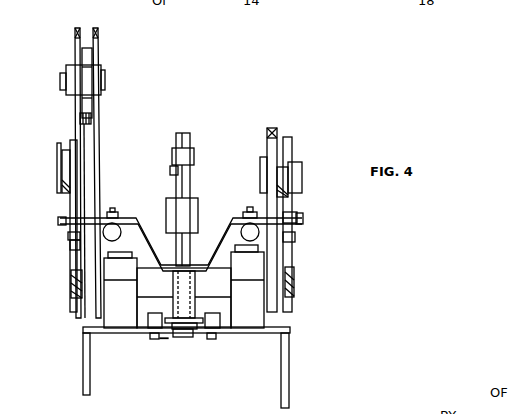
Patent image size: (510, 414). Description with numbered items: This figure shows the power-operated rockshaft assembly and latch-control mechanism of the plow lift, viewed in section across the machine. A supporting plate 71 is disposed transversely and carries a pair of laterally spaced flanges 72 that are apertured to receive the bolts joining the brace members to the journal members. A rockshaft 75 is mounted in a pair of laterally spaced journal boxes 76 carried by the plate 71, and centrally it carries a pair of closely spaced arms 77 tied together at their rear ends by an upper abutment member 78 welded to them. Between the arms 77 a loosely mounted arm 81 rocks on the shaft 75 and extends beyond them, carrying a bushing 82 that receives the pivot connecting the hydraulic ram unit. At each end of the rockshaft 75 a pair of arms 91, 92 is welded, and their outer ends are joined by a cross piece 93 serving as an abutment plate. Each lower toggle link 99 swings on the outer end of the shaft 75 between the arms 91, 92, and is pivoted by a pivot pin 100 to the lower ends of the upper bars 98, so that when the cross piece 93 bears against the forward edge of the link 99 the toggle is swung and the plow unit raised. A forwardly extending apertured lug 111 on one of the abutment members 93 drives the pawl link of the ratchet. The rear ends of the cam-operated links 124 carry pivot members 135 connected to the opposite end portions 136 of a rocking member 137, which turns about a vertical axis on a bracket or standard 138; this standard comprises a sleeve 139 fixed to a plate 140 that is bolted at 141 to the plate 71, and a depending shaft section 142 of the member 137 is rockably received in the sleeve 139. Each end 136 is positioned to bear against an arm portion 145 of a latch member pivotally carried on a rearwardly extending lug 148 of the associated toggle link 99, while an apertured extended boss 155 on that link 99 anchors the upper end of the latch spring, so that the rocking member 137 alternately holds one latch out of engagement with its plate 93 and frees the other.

The supporting plate 71 is at (283, 328).
The flanges 72 is at (83, 358).
The rockshaft 75 is at (152, 284).
The journal boxes 76 is at (120, 322).
The arms 77 is at (170, 171).
The upper abutment member 78 is at (198, 212).
The arm 81 is at (186, 133).
The bushing 82 is at (172, 150).
The arm 91 is at (82, 259).
The arm 92 is at (71, 276).
The cross piece 93 is at (99, 165).
The upper bars 98 is at (96, 27).
The lower toggle link 99 is at (93, 134).
The pivot pin 100 is at (101, 80).
The apertured lug 111 is at (57, 152).
The link 124 is at (68, 236).
The pivot members 135 is at (113, 208).
The end portions 136 is at (62, 219).
The rocking member 137 is at (180, 229).
The bracket or standard 138 is at (208, 332).
The sleeve 139 is at (171, 338).
The plate 140 is at (204, 361).
The bolts 141 is at (150, 340).
The depending shaft section 142 is at (186, 340).
The arm portion 145 is at (70, 245).
The lug 148 is at (66, 181).
The extended boss 155 is at (80, 118).